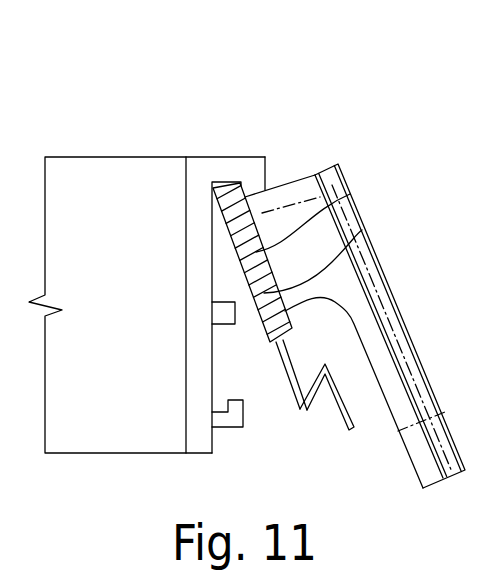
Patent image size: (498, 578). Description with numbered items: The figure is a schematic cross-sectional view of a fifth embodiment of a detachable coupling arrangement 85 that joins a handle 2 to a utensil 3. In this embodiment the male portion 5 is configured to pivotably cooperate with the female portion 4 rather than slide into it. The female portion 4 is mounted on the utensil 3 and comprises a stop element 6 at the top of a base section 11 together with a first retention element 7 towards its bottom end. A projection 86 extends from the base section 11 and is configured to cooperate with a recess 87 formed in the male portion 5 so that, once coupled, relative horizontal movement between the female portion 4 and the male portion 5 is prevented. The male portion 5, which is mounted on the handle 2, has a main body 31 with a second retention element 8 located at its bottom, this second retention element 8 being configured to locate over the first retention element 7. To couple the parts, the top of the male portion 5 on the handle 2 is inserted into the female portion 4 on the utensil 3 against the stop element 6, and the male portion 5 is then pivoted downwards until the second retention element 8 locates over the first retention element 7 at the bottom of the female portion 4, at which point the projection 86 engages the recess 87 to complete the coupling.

The detachable coupling arrangement 85 is at (205, 90).
The utensil 3 is at (97, 157).
The female portion 4 is at (198, 223).
The base section 11 is at (198, 287).
The stop element 6 is at (244, 157).
The projection 86 is at (222, 313).
The first retention element 7 is at (230, 417).
The male portion 5 is at (260, 196).
The second retention element 8 is at (311, 413).
The recess 87 is at (360, 236).
The main body 31 is at (350, 194).
The handle 2 is at (402, 349).